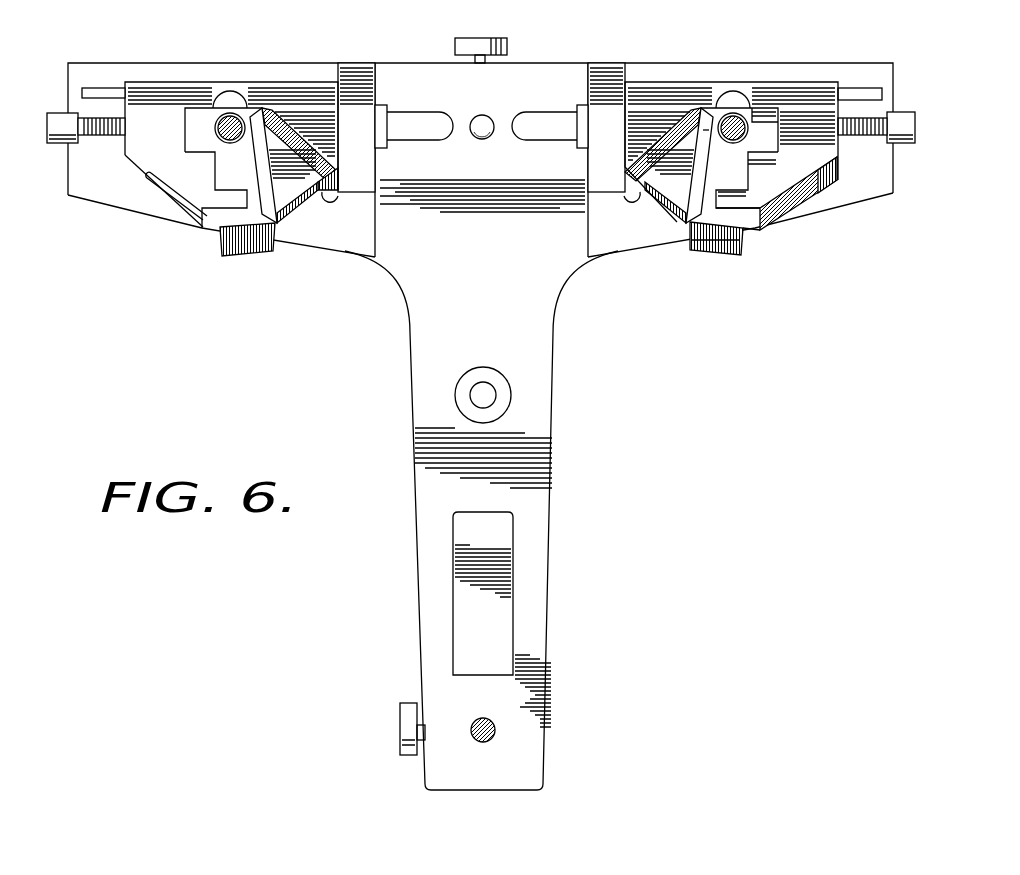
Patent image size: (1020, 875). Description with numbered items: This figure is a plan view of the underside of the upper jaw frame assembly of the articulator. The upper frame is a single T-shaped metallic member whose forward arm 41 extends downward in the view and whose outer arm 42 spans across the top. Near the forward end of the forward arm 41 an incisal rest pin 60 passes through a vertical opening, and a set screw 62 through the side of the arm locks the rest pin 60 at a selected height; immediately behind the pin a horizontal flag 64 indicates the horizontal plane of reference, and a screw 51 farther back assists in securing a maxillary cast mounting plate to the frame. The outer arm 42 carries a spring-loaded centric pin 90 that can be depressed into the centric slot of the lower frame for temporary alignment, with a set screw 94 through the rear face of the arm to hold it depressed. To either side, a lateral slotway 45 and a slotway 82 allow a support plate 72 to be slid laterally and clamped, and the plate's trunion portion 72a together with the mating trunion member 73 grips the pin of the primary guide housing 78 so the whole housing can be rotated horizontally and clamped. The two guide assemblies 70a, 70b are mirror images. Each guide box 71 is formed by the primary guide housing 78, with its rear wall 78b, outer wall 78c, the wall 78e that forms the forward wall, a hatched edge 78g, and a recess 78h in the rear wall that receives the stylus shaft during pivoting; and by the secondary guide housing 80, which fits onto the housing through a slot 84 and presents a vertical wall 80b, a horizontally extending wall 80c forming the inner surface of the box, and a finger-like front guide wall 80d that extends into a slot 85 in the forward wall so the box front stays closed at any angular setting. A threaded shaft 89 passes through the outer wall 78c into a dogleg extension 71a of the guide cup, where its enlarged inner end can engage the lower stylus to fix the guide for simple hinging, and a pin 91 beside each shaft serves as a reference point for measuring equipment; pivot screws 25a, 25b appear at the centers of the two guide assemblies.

The pivot screw 25a is at (215, 128).
The pivot screw 25b is at (770, 128).
The forward arm 41 is at (547, 483).
The outer arm 42 is at (357, 77).
The lateral slotway 45 is at (420, 118).
The screw 51 is at (472, 392).
The incisal rest pin 60 is at (495, 731).
The set screw 62 is at (400, 720).
The horizontal flag 64 is at (508, 572).
The slide member 70a is at (287, 82).
The slide member 70b is at (798, 82).
The guide box 71 is at (712, 168).
The dogleg extension 71a is at (772, 117).
The support plate 72 is at (593, 223).
The trunion portion 72a is at (597, 168).
The mating trunion member 73 is at (595, 68).
The primary guide housing 78 is at (153, 82).
The rear wall 78b is at (765, 110).
The outer wall 78c is at (753, 172).
The wall 78e is at (740, 190).
The clamp member 78g is at (838, 148).
The recess 78h is at (730, 92).
The secondary guide housing 80 is at (255, 255).
The vertical wall 80b is at (727, 250).
The horizontally extending wall 80c is at (717, 147).
The front guide wall 80d is at (753, 237).
The pin 82 is at (580, 110).
The slot 84 is at (667, 213).
The slot 85 is at (803, 193).
The shaft 89 is at (55, 113).
The centric pin 90 is at (483, 139).
The pin 91 is at (877, 90).
The set screw 94 is at (498, 40).